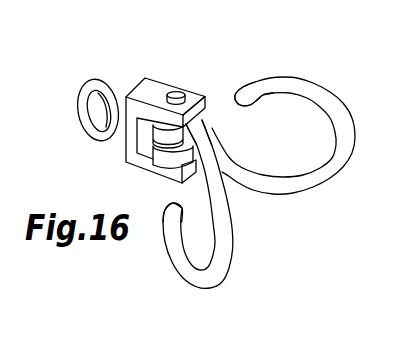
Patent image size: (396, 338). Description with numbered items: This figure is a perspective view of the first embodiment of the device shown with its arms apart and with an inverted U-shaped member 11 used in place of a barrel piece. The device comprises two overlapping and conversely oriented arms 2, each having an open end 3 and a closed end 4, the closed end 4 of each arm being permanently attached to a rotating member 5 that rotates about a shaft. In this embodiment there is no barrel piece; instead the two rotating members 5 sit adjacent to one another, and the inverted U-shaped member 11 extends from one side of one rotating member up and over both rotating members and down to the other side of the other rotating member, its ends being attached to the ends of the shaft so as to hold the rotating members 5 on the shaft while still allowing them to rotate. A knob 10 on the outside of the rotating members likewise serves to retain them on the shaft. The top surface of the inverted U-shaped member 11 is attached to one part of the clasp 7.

The arm 2 is at (328, 172).
The open end 3 is at (250, 87).
The closed end 4 is at (202, 120).
The rotating member 5 is at (155, 131).
The clasp 7 is at (82, 104).
The knob 10 is at (176, 94).
The inverted U-shaped member 11 is at (127, 96).